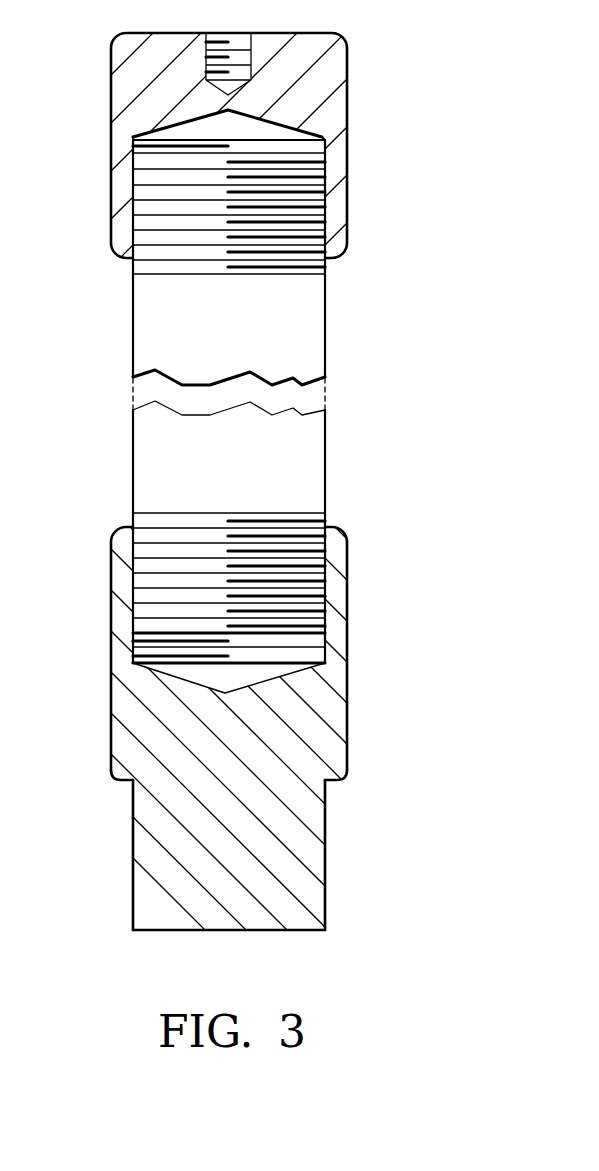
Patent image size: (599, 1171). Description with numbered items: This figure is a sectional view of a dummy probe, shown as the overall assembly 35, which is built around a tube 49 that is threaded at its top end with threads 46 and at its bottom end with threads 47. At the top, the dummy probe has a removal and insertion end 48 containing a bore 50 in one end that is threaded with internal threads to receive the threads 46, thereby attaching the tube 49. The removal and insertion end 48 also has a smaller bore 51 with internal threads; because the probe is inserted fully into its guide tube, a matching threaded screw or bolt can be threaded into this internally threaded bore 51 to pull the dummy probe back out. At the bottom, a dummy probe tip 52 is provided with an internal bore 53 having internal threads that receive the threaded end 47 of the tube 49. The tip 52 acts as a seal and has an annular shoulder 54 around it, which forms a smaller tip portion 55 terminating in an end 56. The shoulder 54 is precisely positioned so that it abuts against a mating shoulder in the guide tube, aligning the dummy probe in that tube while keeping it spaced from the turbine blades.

The bolt assembly 35 is at (373, 43).
The threads 46 is at (325, 209).
The threads 47 is at (325, 565).
The removal and insertion end 48 is at (342, 87).
The tube 49 is at (327, 288).
The bore 50 is at (325, 147).
The smaller bore 51 is at (250, 43).
The dummy probe tip 52 is at (347, 705).
The internal bore 53 is at (325, 650).
The annular shoulder 54 is at (343, 783).
The smaller tip portion 55 is at (325, 865).
The end 56 is at (273, 931).